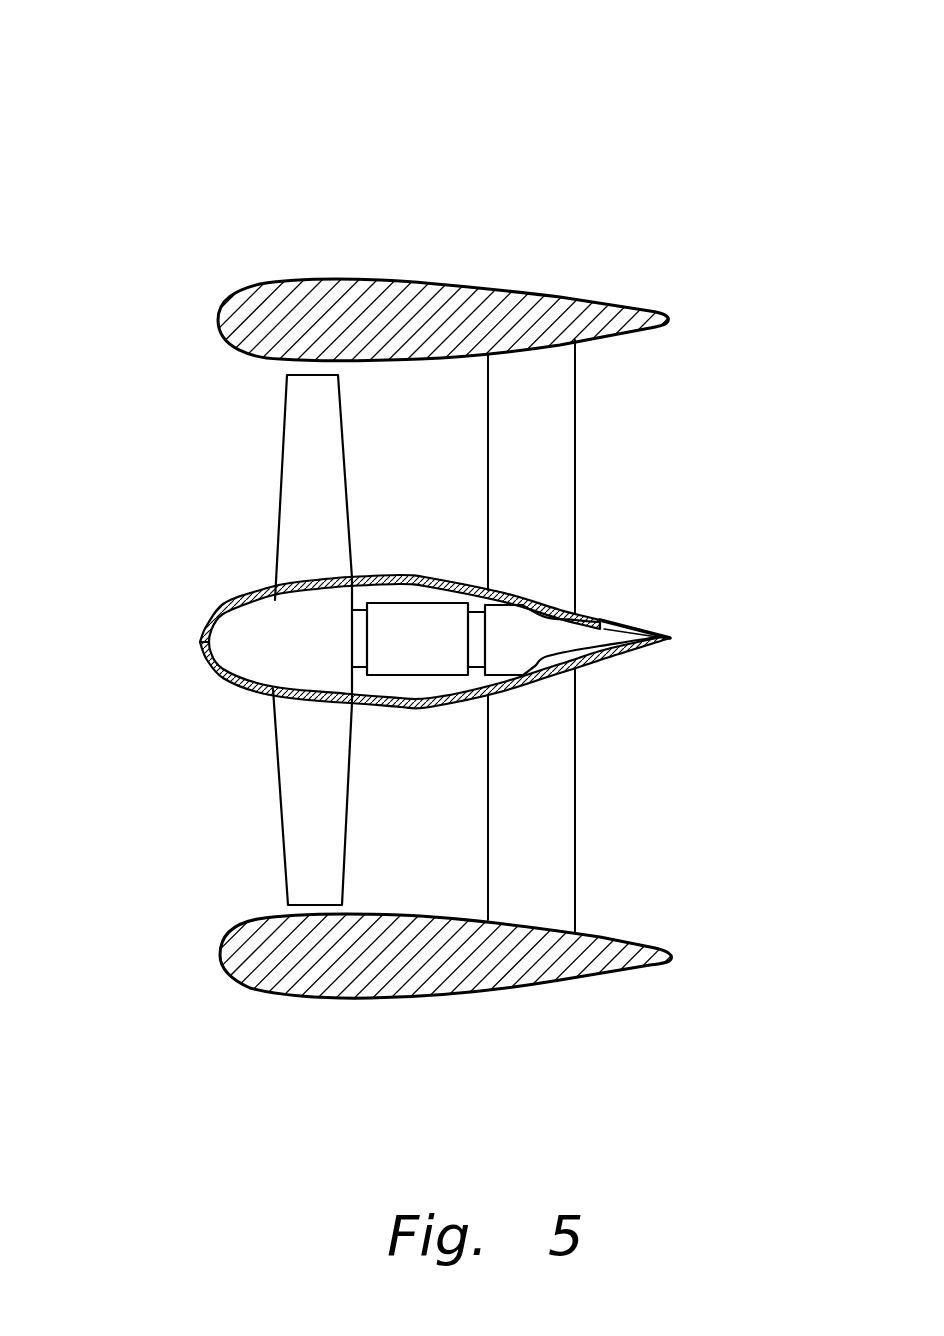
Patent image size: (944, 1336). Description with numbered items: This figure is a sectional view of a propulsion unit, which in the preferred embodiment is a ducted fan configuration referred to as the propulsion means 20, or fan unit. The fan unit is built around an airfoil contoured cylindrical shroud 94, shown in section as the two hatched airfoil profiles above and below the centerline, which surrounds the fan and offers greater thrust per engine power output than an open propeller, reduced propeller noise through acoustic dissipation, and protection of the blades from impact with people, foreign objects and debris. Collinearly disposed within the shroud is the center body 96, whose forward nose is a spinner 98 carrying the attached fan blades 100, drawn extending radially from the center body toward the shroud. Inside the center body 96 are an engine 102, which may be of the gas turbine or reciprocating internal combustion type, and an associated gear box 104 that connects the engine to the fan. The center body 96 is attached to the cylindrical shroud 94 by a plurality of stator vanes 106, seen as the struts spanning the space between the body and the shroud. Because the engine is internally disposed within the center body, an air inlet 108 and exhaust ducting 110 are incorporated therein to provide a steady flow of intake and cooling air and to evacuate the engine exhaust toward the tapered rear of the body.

The propulsion means 20 is at (417, 594).
The airfoil contoured cylindrical shroud 94 is at (347, 277).
The center body 96 is at (407, 705).
The spinner 98 is at (430, 607).
The fan blades 100 is at (278, 478).
The engine 102 is at (505, 652).
The gear box 104 is at (388, 605).
The stator vanes 106 is at (538, 497).
The air inlet 108 is at (421, 577).
The exhaust ducting 110 is at (620, 615).